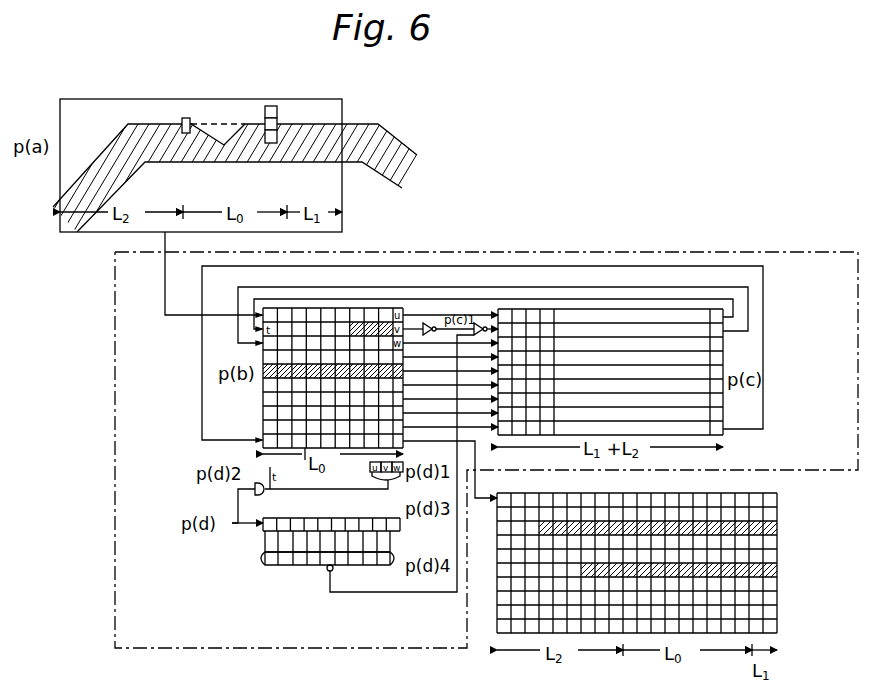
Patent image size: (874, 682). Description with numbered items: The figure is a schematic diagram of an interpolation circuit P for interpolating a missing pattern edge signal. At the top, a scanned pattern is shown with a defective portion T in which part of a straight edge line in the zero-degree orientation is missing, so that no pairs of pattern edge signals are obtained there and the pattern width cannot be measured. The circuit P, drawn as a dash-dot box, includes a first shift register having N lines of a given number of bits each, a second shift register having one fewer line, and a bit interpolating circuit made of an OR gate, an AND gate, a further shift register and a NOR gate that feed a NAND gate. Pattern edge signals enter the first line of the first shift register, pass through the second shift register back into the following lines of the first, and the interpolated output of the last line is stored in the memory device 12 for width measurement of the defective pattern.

The memory device 12 is at (714, 493).
The defective portion of pattern T is at (217, 123).
The interpolation circuit P is at (782, 252).